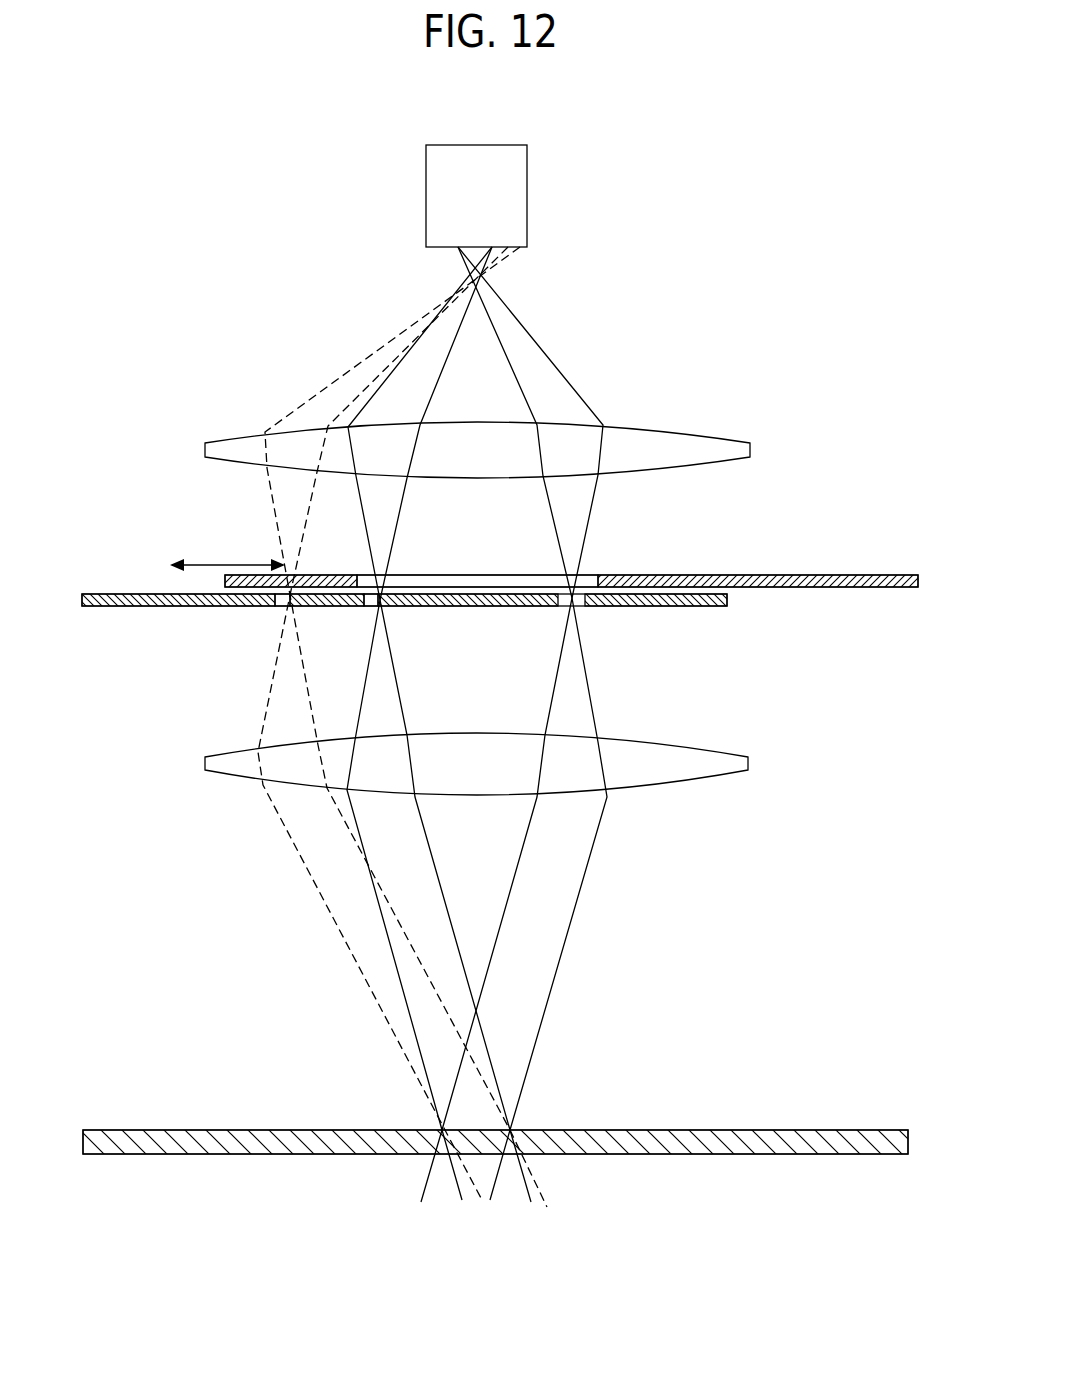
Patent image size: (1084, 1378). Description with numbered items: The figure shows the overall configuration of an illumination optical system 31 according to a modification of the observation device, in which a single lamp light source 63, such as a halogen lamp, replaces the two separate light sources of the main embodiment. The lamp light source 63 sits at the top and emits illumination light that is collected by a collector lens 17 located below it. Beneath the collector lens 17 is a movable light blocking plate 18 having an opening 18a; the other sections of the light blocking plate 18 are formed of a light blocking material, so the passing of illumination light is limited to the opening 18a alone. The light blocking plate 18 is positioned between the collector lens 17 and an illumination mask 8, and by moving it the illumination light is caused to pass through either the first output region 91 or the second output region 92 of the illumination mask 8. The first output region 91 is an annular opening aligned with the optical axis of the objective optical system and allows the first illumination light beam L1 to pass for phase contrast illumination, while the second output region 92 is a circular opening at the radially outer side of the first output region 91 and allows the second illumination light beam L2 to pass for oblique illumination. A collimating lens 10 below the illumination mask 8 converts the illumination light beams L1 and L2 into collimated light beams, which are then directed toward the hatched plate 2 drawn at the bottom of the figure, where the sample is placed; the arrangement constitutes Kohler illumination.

The lamp light source 63 is at (527, 190).
The illumination optical system 31 is at (791, 283).
The first illumination light beam L1 is at (590, 690).
The second illumination light beam L2 is at (268, 720).
The collector lens 17 is at (205, 450).
The light blocking plate 18 is at (571, 541).
The opening 18a is at (586, 576).
The illumination mask 8 is at (404, 596).
The second output region 92 is at (298, 607).
The first output region 91 is at (388, 607).
The collimating lens 10 is at (750, 763).
The workpiece 2 is at (765, 1129).